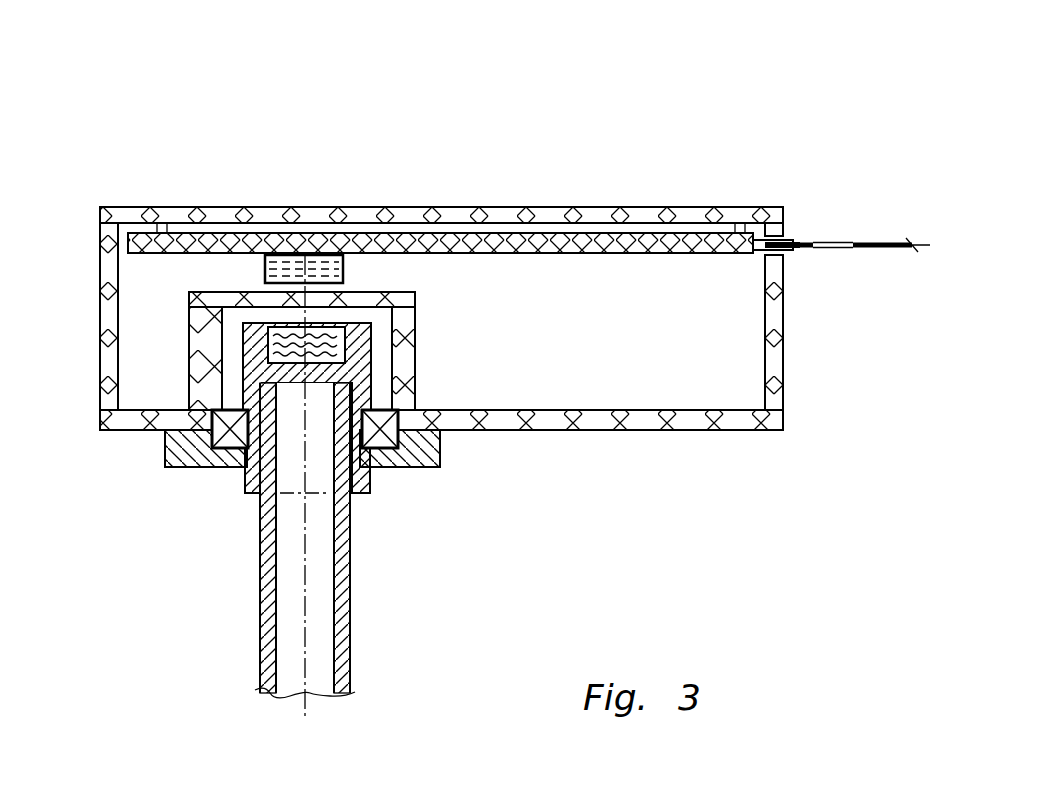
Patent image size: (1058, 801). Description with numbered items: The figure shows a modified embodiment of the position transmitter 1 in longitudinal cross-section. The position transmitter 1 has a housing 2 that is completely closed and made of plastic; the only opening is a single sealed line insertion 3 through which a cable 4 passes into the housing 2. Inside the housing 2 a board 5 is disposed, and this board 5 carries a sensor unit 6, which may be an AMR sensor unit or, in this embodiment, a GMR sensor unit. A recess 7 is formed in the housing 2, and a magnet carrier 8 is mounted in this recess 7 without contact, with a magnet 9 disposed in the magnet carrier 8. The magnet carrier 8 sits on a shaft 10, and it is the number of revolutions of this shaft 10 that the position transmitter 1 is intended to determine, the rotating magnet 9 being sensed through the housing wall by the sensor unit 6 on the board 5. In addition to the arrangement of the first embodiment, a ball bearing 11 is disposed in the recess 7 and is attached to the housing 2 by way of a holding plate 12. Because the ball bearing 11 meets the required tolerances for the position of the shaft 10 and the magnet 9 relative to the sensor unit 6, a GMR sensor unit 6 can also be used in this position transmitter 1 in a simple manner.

The position transmitter 1 is at (687, 106).
The housing 2 is at (102, 432).
The sealed line insertion 3 is at (795, 226).
The cable 4 is at (840, 248).
The board 5 is at (452, 248).
The sensor unit 6 is at (265, 268).
The recess 7 is at (230, 343).
The magnet carrier 8 is at (245, 485).
The magnet 9 is at (345, 347).
The shaft 10 is at (348, 650).
The ball bearing 11 is at (387, 465).
The holding plate 12 is at (427, 468).